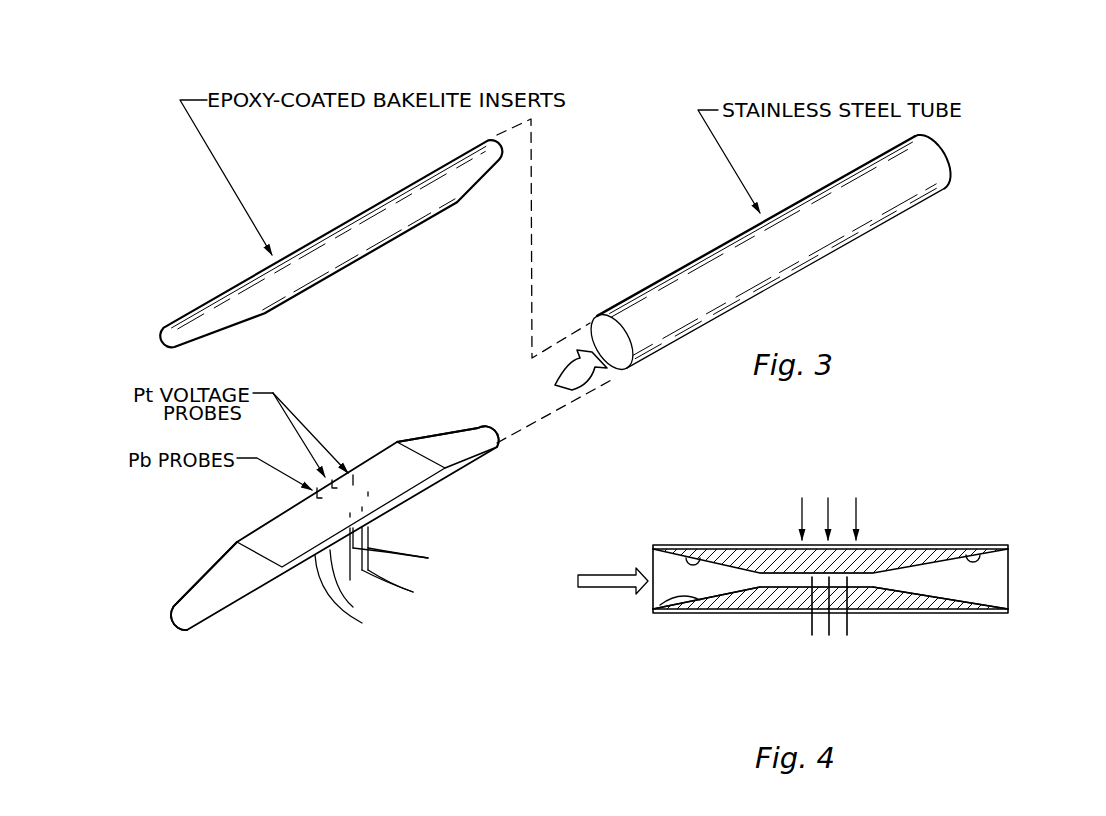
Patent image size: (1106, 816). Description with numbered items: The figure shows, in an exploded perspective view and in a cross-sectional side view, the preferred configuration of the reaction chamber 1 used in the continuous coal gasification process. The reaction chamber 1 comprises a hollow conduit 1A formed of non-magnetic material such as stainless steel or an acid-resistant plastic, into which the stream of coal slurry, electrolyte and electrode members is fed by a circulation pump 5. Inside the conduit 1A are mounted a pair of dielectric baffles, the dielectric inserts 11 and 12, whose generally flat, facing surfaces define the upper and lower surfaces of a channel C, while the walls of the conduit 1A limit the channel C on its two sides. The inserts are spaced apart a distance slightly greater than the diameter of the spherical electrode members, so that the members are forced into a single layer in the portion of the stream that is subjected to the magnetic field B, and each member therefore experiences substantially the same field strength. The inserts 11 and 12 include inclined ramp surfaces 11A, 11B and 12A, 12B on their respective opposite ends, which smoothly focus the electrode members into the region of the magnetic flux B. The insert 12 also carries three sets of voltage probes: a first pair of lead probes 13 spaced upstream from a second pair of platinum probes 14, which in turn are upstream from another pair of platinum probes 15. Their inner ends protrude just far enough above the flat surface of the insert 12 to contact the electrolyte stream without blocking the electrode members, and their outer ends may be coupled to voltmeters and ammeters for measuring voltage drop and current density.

In FIG. 3, the reaction chamber 1 is at (800, 193).
In FIG. 4, the reaction chamber 1 is at (882, 517).
In FIG. 3, the hollow conduit 1A is at (781, 258).
In FIG. 4, the hollow conduit 1A is at (925, 544).
In FIG. 3, the circulation pump 5 is at (573, 368).
In FIG. 4, the circulation pump 5 is at (605, 580).
In FIG. 3, the dielectric insert 11 is at (342, 238).
In FIG. 4, the dielectric insert 11 is at (762, 556).
In FIG. 4, the inclined ramp surface 11A is at (685, 552).
In FIG. 4, the inclined ramp surface 11B is at (982, 551).
In FIG. 3, the dielectric insert 12 is at (297, 567).
In FIG. 4, the dielectric insert 12 is at (797, 595).
In FIG. 3, the inclined ramp surface 12A is at (202, 597).
In FIG. 4, the inclined ramp surface 12A is at (657, 600).
In FIG. 3, the inclined ramp surface 12B is at (443, 442).
In FIG. 4, the inclined ramp surface 12B is at (957, 593).
In FIG. 3, the pair of lead probes 13 is at (353, 593).
In FIG. 3, the pair of platinum probes 14 is at (395, 567).
In FIG. 3, the pair of platinum probes 15 is at (404, 548).
In FIG. 4, the magnetic field B is at (829, 506).
In FIG. 4, the channel C is at (882, 577).